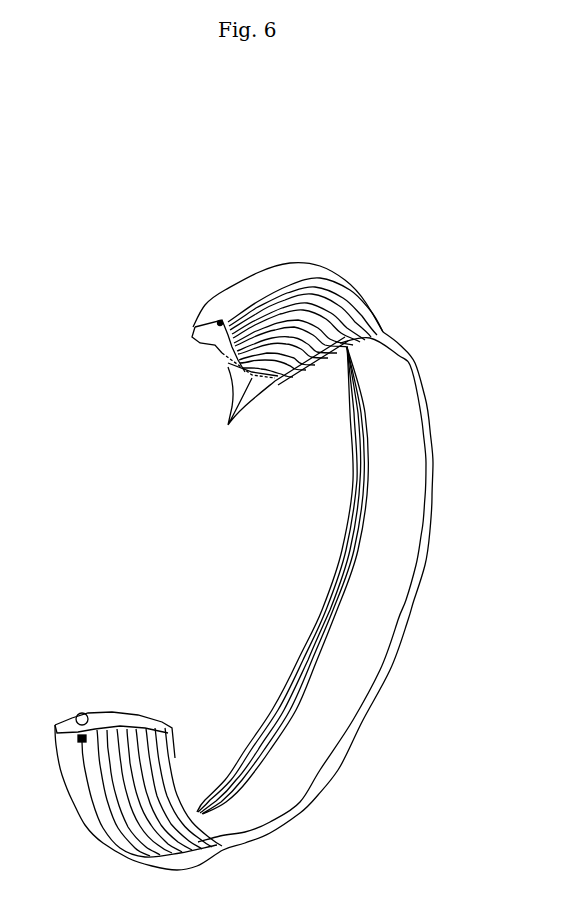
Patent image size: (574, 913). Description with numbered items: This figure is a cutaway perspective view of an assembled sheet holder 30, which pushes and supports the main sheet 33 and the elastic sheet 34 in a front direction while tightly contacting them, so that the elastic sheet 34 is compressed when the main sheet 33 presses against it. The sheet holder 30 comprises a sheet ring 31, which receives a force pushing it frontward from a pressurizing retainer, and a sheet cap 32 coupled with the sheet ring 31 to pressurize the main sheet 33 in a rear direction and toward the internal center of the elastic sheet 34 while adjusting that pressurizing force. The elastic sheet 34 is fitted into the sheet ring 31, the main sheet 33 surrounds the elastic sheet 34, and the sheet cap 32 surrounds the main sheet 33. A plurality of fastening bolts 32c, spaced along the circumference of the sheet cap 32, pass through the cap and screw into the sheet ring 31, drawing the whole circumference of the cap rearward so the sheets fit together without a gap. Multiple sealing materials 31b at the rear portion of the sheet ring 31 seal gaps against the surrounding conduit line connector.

The sheet holder 30 is at (288, 215).
The sheet ring 31 is at (225, 370).
The sealing materials 31b is at (244, 411).
The sheet cap 32 is at (193, 324).
The fastening bolt 32c is at (300, 268).
The main sheet 33 is at (205, 343).
The elastic sheet 34 is at (205, 357).